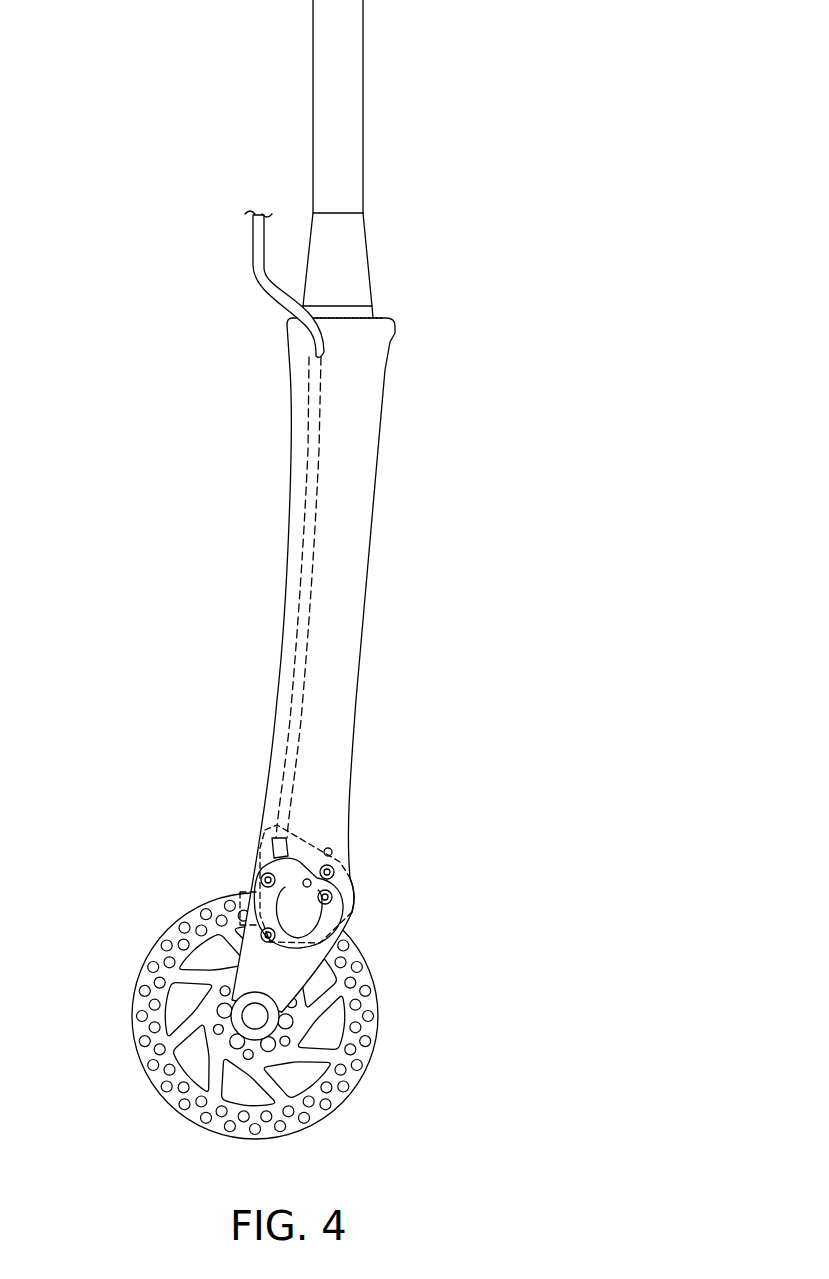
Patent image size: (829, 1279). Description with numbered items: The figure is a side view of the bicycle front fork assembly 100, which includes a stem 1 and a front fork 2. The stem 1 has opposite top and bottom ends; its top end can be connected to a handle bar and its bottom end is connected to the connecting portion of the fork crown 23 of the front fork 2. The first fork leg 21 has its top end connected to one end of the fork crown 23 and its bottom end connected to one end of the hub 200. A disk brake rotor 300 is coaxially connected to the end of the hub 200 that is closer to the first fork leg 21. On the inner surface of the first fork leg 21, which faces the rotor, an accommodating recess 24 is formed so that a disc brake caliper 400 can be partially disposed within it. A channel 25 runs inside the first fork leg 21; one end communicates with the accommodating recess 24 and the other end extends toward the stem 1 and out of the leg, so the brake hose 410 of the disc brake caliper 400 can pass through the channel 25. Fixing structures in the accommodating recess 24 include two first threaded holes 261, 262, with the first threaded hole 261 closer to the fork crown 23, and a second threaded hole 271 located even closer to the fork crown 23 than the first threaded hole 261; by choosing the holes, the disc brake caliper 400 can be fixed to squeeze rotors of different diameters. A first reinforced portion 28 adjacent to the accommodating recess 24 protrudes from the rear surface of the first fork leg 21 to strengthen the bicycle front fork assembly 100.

The bicycle front fork assembly 100 is at (147, 368).
The stem 1 is at (380, 160).
The front fork 2 is at (402, 386).
The first fork leg 21 is at (357, 513).
The fork crown 23 is at (343, 317).
The accommodating recess 24 is at (266, 856).
The channel 25 is at (302, 600).
The first reinforced portion 28 is at (355, 896).
The first threaded hole 261 is at (334, 872).
The first threaded hole 262 is at (262, 936).
The second threaded hole 271 is at (333, 852).
The hub 200 is at (192, 1054).
The disk brake rotor 300 is at (394, 1018).
The disc brake caliper 400 is at (250, 880).
The brake hose 410 is at (252, 252).